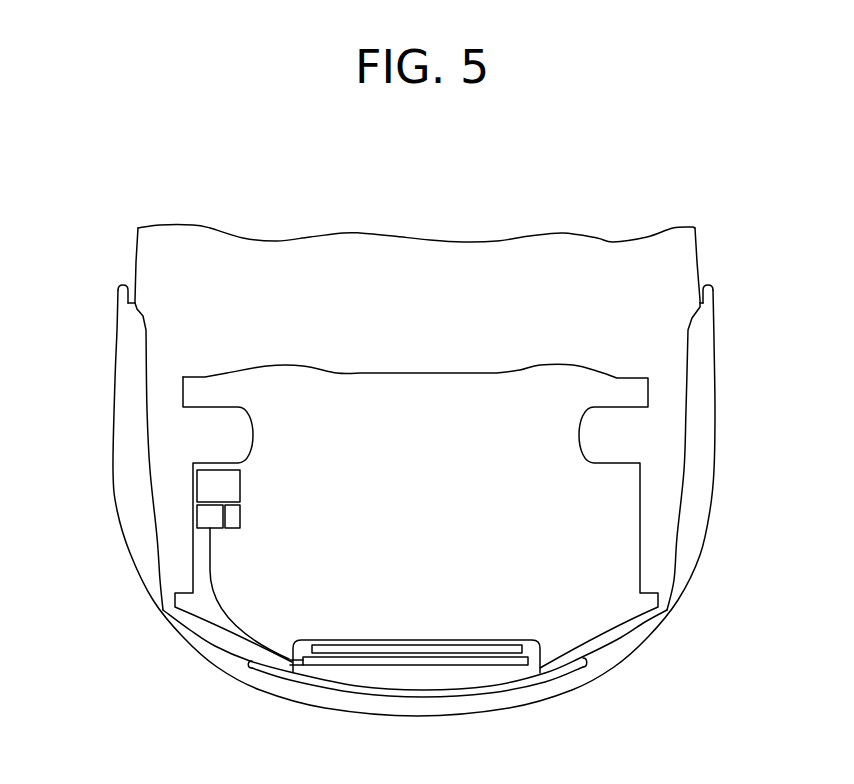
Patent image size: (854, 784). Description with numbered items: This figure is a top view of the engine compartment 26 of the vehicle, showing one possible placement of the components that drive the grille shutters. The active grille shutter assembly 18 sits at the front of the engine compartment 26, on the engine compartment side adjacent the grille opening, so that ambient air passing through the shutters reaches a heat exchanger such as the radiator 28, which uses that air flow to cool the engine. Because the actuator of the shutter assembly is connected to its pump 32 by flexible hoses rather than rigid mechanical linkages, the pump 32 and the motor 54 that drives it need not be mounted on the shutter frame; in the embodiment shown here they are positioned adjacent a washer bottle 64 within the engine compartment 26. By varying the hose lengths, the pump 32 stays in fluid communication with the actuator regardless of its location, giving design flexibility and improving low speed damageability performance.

The active grille shutter assembly 18 is at (475, 665).
The engine compartment 26 is at (603, 512).
The radiator 28 is at (452, 640).
The pump 32 is at (200, 520).
The motor 54 is at (240, 518).
The washer bottle 64 is at (200, 485).